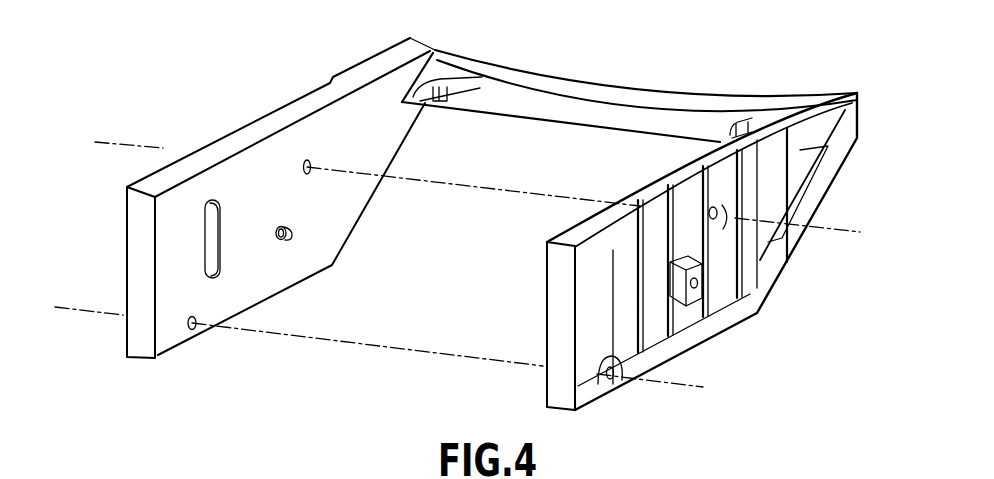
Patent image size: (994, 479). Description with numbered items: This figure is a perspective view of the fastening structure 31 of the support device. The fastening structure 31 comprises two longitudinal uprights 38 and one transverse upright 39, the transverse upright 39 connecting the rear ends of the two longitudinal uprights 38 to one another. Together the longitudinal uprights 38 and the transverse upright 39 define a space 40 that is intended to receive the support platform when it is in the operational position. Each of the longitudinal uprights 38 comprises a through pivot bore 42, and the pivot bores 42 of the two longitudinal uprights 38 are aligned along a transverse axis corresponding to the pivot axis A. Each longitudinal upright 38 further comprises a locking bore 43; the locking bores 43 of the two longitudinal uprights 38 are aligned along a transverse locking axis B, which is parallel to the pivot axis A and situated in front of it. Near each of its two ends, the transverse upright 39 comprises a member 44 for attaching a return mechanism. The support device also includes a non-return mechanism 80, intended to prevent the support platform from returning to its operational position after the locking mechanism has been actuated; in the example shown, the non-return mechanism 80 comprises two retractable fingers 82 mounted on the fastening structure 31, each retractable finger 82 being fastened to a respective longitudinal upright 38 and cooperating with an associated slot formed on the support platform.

The fastening structure 31 is at (478, 242).
The longitudinal upright 38 is at (157, 173).
The transverse upright 39 is at (658, 100).
The space 40 is at (341, 329).
The pivot bore 42 is at (306, 160).
The locking bore 43 is at (193, 331).
The member for attaching a return mechanism 44 is at (458, 103).
The non-return mechanism 80 is at (302, 246).
The retractable finger 82 is at (293, 240).